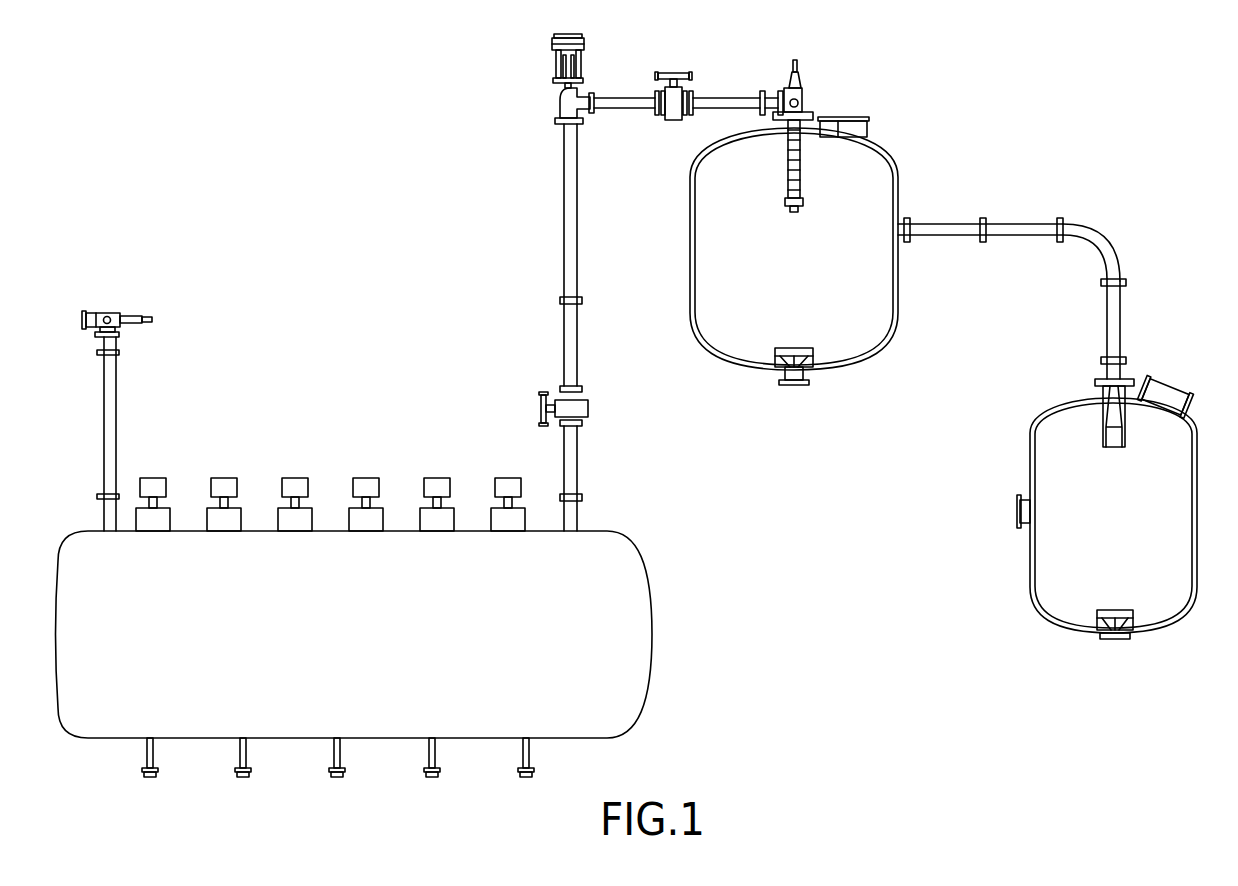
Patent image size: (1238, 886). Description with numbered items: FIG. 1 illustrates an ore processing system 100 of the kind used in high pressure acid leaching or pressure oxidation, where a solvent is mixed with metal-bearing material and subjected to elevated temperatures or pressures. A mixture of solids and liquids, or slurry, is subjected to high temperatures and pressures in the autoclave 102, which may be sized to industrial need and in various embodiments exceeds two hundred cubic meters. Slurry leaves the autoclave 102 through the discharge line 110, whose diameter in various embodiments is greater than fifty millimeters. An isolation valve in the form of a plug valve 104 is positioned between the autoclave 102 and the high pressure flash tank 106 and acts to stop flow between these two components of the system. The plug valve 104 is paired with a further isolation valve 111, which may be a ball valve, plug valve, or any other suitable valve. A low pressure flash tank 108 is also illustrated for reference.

The ore processing system 100 is at (283, 175).
The autoclave 102 is at (262, 522).
The plug valve 104 is at (510, 66).
The high pressure flash tank 106 is at (882, 150).
The low pressure flash tank 108 is at (1030, 554).
The discharge line 110 is at (545, 232).
The isolation valve 111 is at (523, 370).